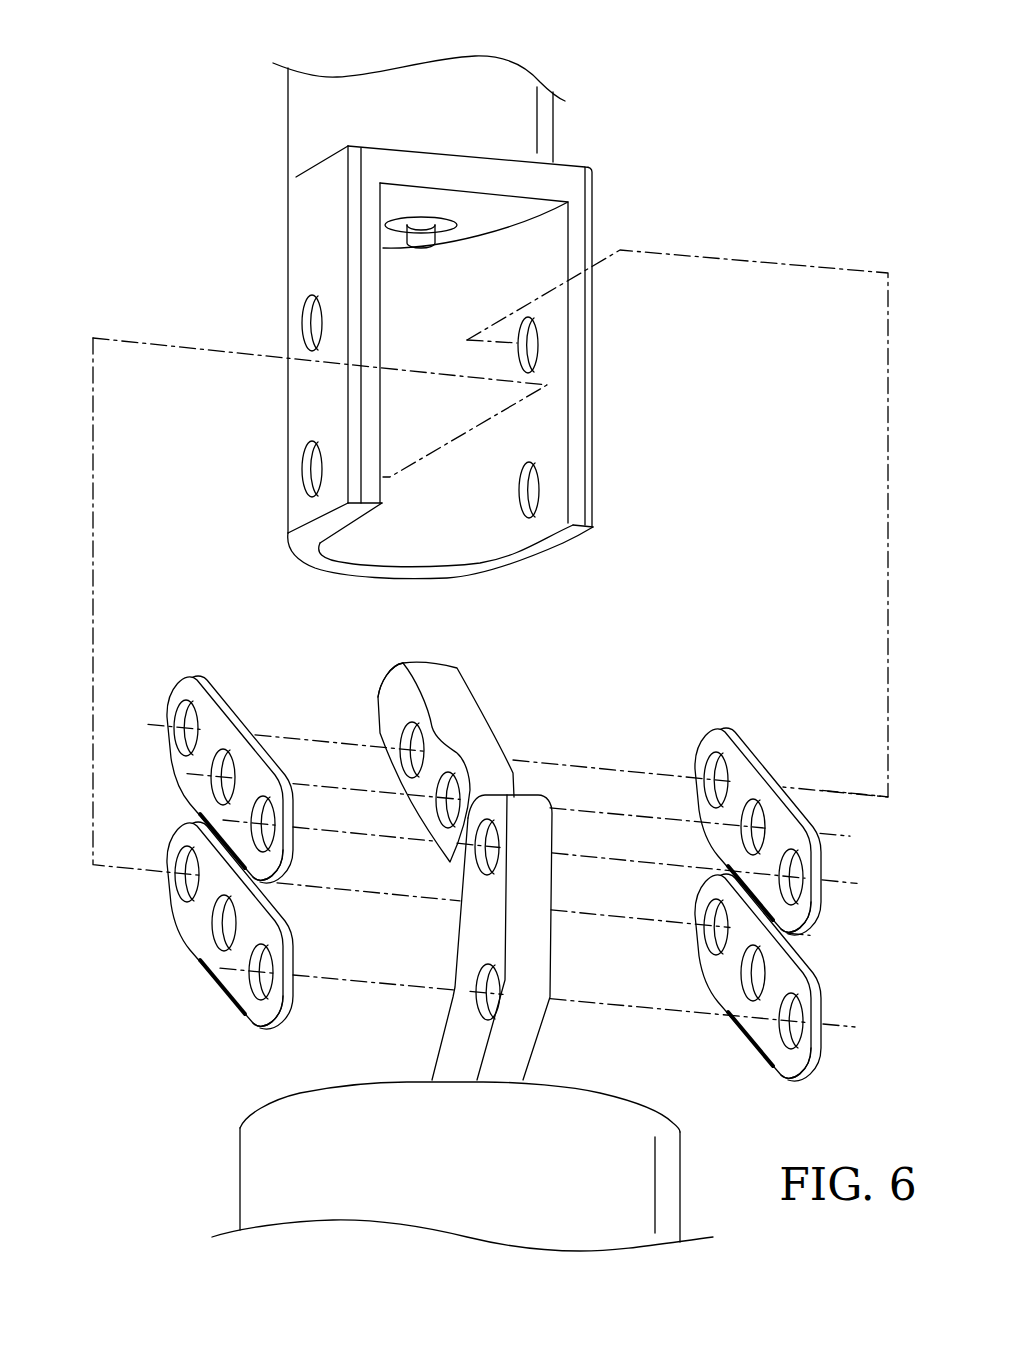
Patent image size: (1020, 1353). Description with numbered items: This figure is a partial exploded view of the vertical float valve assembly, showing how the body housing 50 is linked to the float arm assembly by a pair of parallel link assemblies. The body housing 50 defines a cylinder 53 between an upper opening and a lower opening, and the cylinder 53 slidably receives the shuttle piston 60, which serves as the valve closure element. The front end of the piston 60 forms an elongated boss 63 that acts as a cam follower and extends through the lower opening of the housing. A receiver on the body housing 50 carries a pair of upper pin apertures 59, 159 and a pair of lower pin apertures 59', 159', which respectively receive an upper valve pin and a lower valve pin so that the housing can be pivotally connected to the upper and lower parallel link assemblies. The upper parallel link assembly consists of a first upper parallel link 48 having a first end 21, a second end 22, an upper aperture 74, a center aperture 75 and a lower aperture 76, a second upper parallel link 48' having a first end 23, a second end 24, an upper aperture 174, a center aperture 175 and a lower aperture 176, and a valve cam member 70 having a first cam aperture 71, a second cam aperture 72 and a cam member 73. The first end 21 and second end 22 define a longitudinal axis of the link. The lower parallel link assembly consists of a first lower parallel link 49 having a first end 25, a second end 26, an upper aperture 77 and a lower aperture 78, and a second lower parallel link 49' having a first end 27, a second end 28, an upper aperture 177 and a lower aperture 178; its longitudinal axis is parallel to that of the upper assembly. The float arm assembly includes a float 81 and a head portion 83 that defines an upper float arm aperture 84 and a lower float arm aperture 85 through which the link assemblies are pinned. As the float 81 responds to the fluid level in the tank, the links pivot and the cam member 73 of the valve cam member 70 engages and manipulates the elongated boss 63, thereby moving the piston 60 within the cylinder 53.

The body housing 50 is at (312, 212).
The cylinder 53 is at (398, 228).
The upper pin aperture 59 is at (271, 323).
The lower pin aperture 59' is at (272, 469).
The shuttle piston 60 is at (425, 227).
The elongated boss 63 is at (423, 248).
The upper pin aperture 159 is at (475, 345).
The lower pin aperture 159' is at (481, 490).
The first end 21 is at (178, 688).
The second end 22 is at (283, 850).
The first end 23 is at (700, 758).
The second end 24 is at (813, 900).
The first end 25 is at (175, 842).
The second end 26 is at (280, 1010).
The first end 27 is at (700, 908).
The second end 28 is at (807, 1060).
The first upper parallel link 48 is at (243, 754).
The second upper parallel link 48' is at (771, 806).
The first lower parallel link 49 is at (272, 925).
The second lower parallel link 49' is at (804, 977).
The valve cam member 70 is at (477, 735).
The first cam aperture 71 is at (410, 740).
The second cam aperture 72 is at (450, 812).
The cam member 73 is at (378, 695).
The upper aperture 74 is at (180, 717).
The center aperture 75 is at (223, 768).
The lower aperture 76 is at (257, 813).
The upper aperture 77 is at (180, 890).
The lower aperture 78 is at (255, 983).
The float 81 is at (257, 1170).
The head portion 83 is at (478, 937).
The upper float arm aperture 84 is at (483, 865).
The lower float arm aperture 85 is at (483, 1000).
The upper aperture 174 is at (713, 772).
The center aperture 175 is at (750, 823).
The lower aperture 176 is at (790, 868).
The upper aperture 177 is at (712, 938).
The lower aperture 178 is at (790, 1032).